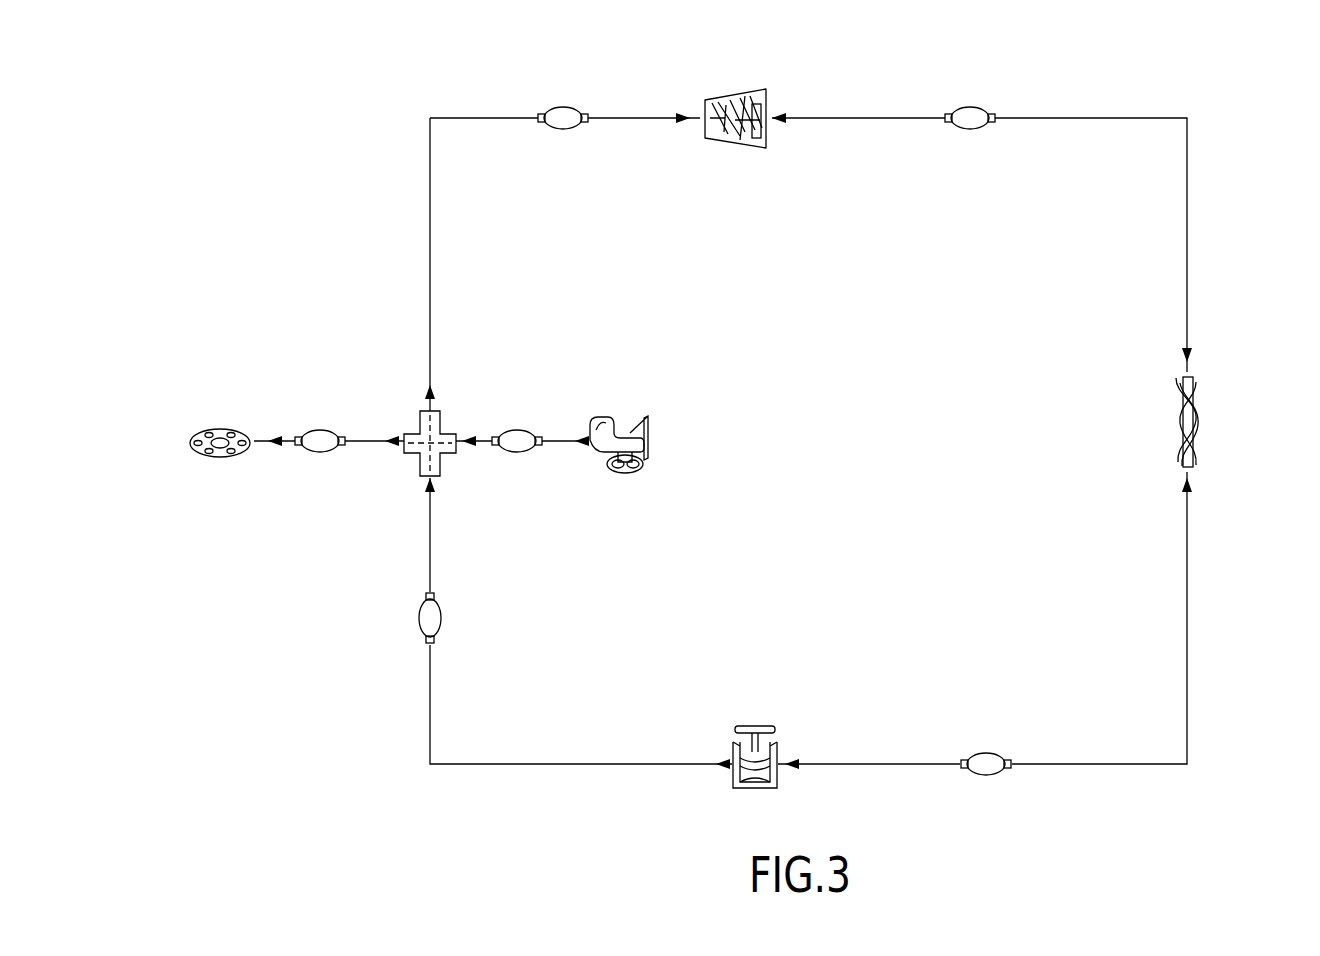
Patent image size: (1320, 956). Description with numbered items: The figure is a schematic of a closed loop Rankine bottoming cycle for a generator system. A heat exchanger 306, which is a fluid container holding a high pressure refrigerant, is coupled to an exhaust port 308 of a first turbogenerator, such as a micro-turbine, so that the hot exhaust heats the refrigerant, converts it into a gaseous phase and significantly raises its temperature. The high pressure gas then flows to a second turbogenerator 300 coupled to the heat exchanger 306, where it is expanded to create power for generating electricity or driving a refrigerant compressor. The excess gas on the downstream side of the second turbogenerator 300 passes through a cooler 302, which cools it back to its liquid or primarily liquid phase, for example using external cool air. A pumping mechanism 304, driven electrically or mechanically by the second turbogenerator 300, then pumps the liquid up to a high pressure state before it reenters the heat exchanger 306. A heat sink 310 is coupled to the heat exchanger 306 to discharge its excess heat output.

The second turbogenerator 300 is at (740, 97).
The cooler 302 is at (1200, 412).
The pumping mechanism 304 is at (755, 726).
The heat exchanger 306 is at (448, 434).
The exhaust port 308 is at (654, 432).
The heat sink 310 is at (222, 429).